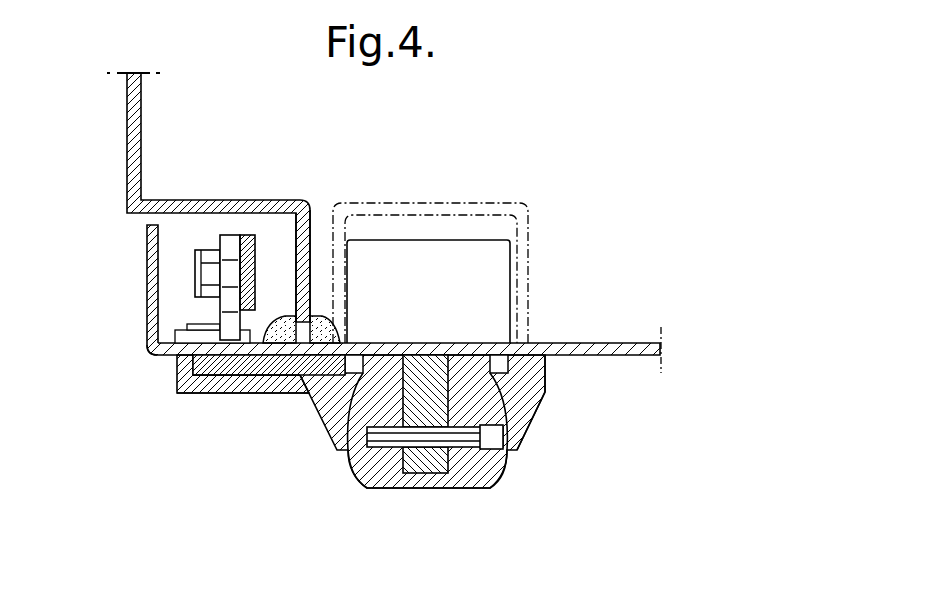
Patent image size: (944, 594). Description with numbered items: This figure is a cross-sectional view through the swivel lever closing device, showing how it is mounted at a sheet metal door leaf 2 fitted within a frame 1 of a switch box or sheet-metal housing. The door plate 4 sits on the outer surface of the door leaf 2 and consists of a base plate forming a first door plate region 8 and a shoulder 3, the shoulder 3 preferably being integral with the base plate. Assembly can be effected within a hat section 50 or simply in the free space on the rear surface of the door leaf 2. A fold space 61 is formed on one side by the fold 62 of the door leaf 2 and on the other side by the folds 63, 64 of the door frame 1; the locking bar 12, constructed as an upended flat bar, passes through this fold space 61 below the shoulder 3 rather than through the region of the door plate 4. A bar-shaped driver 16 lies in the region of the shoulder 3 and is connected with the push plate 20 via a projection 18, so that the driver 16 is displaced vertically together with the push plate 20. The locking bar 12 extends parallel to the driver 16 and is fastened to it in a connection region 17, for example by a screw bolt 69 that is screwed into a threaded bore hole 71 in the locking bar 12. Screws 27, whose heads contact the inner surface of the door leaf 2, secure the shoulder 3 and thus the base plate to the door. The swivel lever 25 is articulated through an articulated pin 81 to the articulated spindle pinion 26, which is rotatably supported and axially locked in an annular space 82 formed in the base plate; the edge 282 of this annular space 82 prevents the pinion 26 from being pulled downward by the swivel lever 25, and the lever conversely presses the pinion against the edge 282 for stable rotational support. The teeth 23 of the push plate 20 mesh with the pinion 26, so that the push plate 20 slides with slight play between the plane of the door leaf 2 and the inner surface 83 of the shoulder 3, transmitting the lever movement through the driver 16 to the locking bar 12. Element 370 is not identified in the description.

The frame 1 is at (127, 115).
The door leaf 2 is at (593, 343).
The shoulder 3 is at (230, 395).
The door plate 4 is at (545, 418).
The first door plate region 8 is at (545, 380).
The locking bar 12 is at (258, 262).
The driver 16 is at (220, 235).
The connection region 17 is at (147, 303).
The projection 18 is at (200, 400).
The push plate 20 is at (280, 378).
The teeth of the push plate 23 is at (345, 385).
The swivel lever 25 is at (473, 475).
The articulated spindle pinion 26 is at (405, 405).
The screw 27 is at (175, 345).
The hat section 50 is at (455, 204).
The fold space 61 is at (193, 233).
The fold of the door leaf 62 is at (190, 273).
The fold of the door frame 63 is at (248, 235).
The fold of the door frame 64 is at (312, 240).
The screw bolt 69 is at (198, 303).
The threaded bore hole 71 is at (268, 262).
The articulated pin 81 is at (392, 440).
The annular space 82 is at (545, 397).
The inner surface of the shoulder 83 is at (255, 375).
The edge of the annular space 282 is at (527, 428).
The component 370 is at (493, 272).